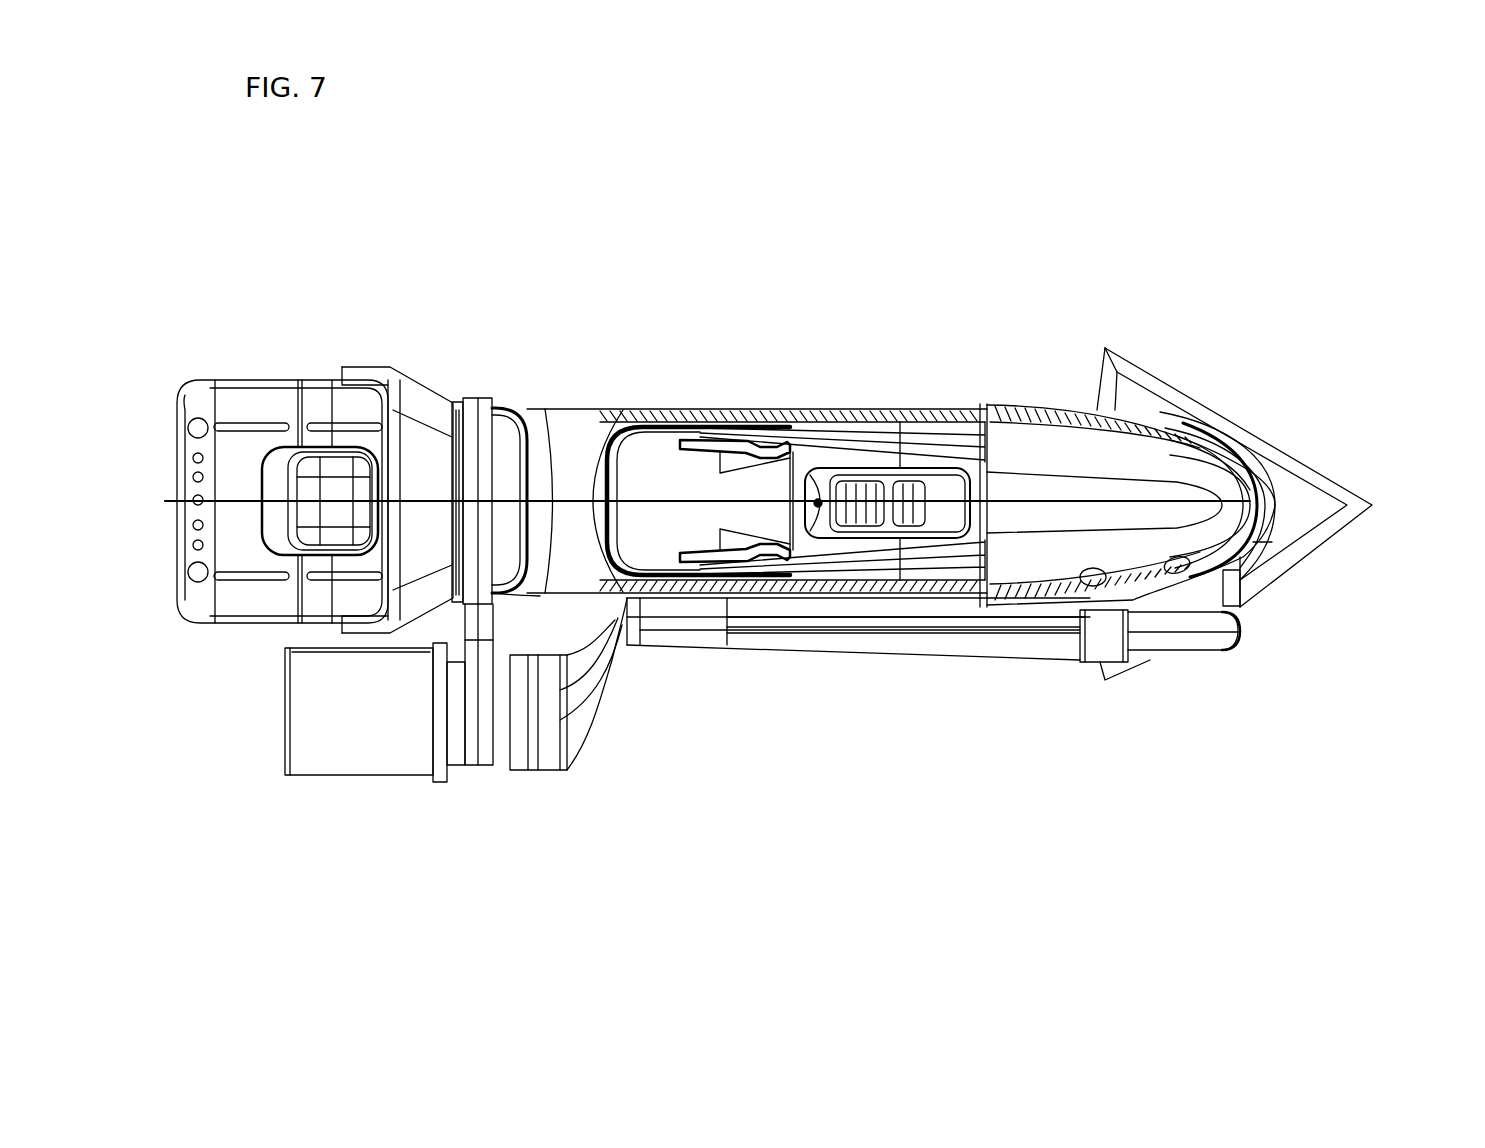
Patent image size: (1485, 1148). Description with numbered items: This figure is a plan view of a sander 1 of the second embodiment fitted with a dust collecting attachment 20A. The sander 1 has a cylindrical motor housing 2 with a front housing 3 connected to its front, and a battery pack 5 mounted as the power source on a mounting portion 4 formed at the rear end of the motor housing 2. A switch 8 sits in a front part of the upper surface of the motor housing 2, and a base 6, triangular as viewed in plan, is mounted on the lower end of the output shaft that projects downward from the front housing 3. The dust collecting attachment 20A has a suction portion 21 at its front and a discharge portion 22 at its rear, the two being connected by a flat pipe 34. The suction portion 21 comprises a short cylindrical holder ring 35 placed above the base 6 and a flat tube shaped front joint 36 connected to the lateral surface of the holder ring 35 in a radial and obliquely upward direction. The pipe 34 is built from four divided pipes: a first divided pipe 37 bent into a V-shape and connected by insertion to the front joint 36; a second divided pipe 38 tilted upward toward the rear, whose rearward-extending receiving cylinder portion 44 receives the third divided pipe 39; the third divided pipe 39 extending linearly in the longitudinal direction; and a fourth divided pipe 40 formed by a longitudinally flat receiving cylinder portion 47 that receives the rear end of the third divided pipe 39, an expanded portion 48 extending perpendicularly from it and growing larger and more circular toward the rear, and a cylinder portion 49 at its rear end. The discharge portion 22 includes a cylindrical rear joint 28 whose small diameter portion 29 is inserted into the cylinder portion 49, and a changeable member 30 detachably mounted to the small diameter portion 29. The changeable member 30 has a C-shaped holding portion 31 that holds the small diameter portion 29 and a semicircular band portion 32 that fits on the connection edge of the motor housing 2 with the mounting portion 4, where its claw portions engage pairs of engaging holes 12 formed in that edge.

The sander 1 is at (858, 372).
The motor housing 2 is at (693, 466).
The front housing 3 is at (1055, 400).
The mounting portion 4 is at (425, 400).
The battery pack 5 is at (258, 396).
The base 6 is at (1280, 440).
The switch 8 is at (899, 466).
The engaging holes 12 is at (515, 596).
The dust collecting attachment 20A is at (806, 655).
The suction portion 21 is at (1257, 547).
The discharge portion 22 is at (458, 782).
The rear joint 28 is at (362, 752).
The small diameter portion 29 is at (500, 752).
The changeable member 30 is at (485, 392).
The holding portion 31 is at (485, 757).
The band portion 32 is at (516, 400).
The pipe 34 is at (757, 650).
The holder ring 35 is at (1273, 512).
The front joint 36 is at (1233, 588).
The first divided pipe 37 is at (1250, 632).
The second divided pipe 38 is at (1178, 642).
The third divided pipe 39 is at (918, 630).
The fourth divided pipe 40 is at (603, 702).
The receiving cylinder portion 44 is at (1090, 637).
The receiving cylinder portion 47 is at (710, 625).
The expanded portion 48 is at (598, 672).
The cylinder portion 49 is at (548, 757).